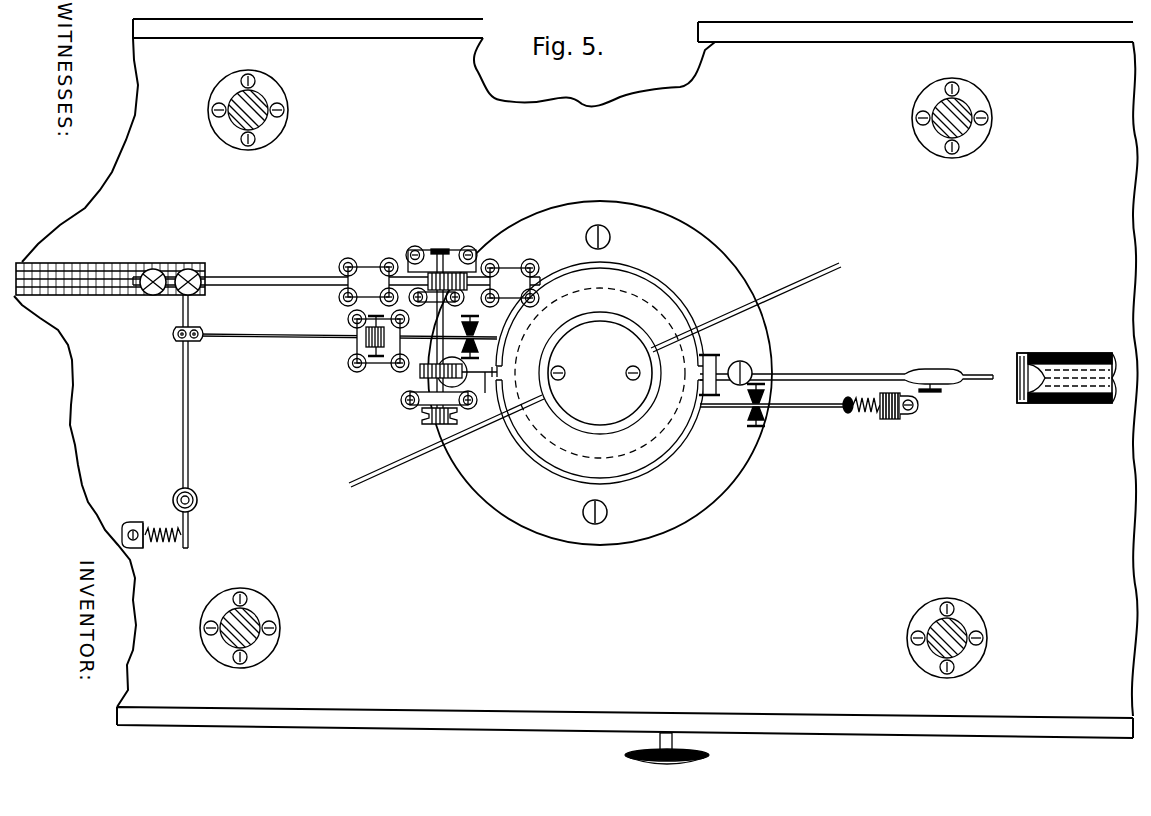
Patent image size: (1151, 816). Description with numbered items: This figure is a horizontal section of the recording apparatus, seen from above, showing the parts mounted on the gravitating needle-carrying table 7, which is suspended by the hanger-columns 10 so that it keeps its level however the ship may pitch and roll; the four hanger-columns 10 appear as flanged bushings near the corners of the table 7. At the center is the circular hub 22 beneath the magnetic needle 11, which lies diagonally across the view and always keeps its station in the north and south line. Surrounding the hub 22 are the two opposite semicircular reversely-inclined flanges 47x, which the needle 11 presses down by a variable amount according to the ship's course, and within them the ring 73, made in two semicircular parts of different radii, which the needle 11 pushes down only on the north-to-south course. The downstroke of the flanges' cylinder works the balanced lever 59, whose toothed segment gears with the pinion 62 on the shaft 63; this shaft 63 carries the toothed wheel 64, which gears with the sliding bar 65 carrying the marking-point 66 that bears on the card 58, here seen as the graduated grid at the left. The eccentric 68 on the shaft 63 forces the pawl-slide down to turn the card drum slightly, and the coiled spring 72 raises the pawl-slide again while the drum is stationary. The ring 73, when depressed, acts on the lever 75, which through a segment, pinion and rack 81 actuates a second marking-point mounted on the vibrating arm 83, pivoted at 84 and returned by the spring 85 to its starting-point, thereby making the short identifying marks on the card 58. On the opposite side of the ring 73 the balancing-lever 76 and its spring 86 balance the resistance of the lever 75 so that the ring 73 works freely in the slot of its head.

The gravitating needle-carrying table 7 is at (576, 391).
The coiled spring 72 is at (1048, 362).
The hanger-columns 10 is at (266, 96).
The magnetic needle 11 is at (595, 375).
The hub 22 is at (600, 373).
The reversely-inclined flanges 47x is at (600, 375).
The card 58 is at (73, 268).
The lever 59 is at (485, 388).
The pinion 62 is at (418, 373).
The shaft 63 is at (426, 400).
The toothed wheel 64 is at (400, 262).
The sliding bar 65 is at (324, 275).
The marking-point 66 is at (153, 270).
The eccentric 68 is at (433, 422).
The ring 73 is at (603, 288).
The lever 75 is at (486, 333).
The balancing-lever 76 is at (738, 404).
The rack 81 is at (340, 340).
The vibrating arm 83 is at (190, 396).
The pivot 84 is at (198, 500).
The spring 85 is at (178, 548).
The spring 86 is at (864, 410).